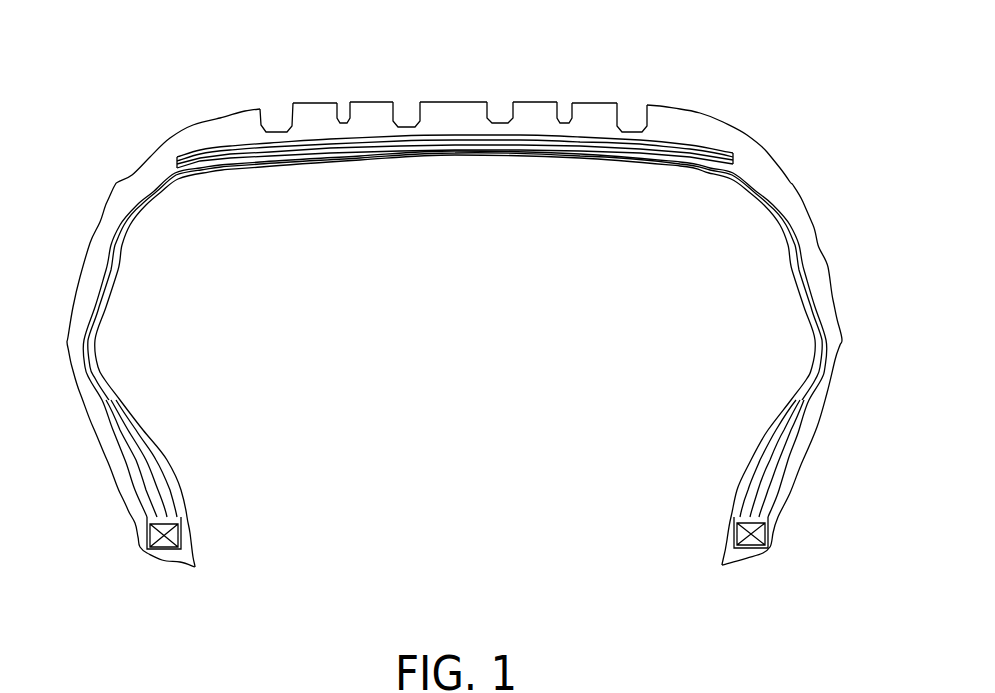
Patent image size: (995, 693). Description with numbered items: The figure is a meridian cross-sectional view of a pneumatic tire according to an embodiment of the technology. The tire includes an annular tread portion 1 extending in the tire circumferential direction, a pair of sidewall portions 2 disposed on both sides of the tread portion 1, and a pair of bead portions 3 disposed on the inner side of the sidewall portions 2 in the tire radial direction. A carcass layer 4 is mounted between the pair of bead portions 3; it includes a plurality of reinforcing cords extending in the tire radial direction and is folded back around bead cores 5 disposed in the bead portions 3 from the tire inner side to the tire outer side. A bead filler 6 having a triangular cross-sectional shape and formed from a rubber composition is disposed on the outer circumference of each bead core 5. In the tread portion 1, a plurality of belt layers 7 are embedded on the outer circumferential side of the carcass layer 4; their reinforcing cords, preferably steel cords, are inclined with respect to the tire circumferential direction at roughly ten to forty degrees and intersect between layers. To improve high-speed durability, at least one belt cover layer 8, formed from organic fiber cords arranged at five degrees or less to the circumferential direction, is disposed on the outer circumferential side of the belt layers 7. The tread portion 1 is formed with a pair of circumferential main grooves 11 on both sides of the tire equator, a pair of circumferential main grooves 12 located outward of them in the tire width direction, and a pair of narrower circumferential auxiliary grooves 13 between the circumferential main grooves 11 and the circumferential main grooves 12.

The tread portion 1 is at (542, 97).
The sidewall portion 2 is at (92, 224).
The bead portion 3 is at (131, 533).
The carcass layer 4 is at (753, 186).
The bead core 5 is at (177, 540).
The bead filler 6 is at (157, 497).
The belt layer 7 is at (610, 147).
The belt cover layer 8 is at (218, 146).
The circumferential main groove 11 is at (404, 108).
The circumferential main groove 12 is at (277, 109).
The circumferential auxiliary groove 13 is at (344, 108).